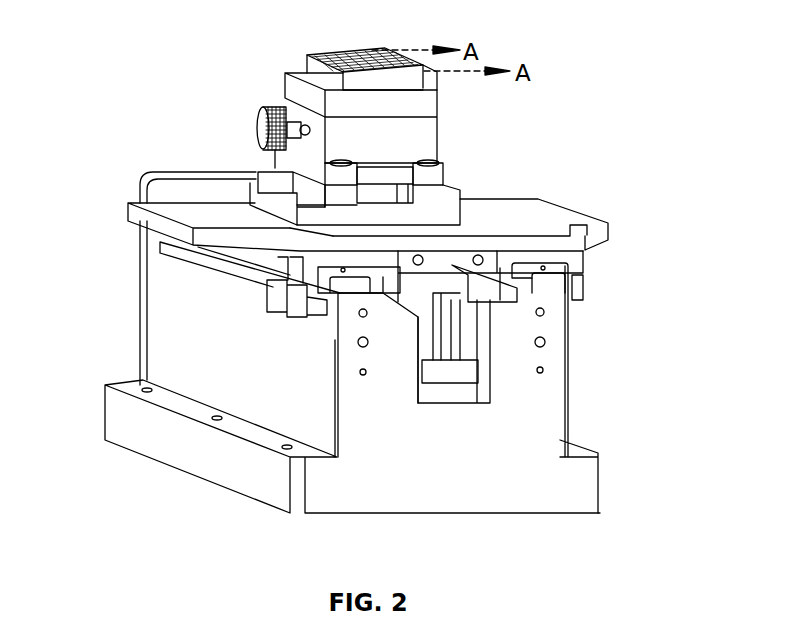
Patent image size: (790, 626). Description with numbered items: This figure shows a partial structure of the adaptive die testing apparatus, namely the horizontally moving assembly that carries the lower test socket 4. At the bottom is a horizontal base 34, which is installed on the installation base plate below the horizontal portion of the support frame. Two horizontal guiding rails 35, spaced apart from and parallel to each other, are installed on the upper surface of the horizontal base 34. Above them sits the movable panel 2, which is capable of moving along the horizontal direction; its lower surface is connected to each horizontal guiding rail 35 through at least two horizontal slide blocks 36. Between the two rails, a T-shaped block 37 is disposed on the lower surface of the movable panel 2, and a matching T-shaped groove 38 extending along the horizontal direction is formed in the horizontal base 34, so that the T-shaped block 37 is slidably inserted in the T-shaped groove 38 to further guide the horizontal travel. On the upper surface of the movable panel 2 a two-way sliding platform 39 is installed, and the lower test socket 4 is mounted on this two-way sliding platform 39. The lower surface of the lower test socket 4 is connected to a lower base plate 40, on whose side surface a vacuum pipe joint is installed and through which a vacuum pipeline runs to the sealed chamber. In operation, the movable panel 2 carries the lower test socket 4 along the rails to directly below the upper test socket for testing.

The movable panel 2 is at (522, 210).
The lower test socket 4 is at (323, 68).
The horizontal base 34 is at (193, 352).
The horizontal guiding rail 35 is at (553, 285).
The horizontal slide block 36 is at (567, 260).
The T-shaped block 37 is at (440, 368).
The T-shaped groove 38 is at (460, 373).
The two-way sliding platform 39 is at (413, 143).
The lower base plate 40 is at (298, 90).